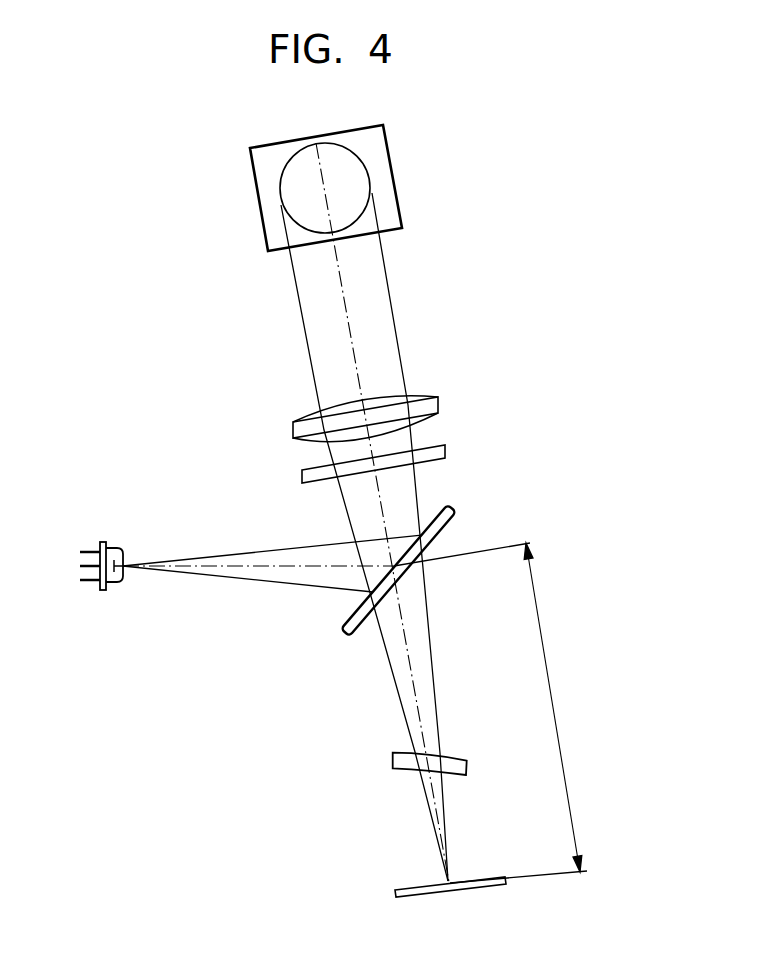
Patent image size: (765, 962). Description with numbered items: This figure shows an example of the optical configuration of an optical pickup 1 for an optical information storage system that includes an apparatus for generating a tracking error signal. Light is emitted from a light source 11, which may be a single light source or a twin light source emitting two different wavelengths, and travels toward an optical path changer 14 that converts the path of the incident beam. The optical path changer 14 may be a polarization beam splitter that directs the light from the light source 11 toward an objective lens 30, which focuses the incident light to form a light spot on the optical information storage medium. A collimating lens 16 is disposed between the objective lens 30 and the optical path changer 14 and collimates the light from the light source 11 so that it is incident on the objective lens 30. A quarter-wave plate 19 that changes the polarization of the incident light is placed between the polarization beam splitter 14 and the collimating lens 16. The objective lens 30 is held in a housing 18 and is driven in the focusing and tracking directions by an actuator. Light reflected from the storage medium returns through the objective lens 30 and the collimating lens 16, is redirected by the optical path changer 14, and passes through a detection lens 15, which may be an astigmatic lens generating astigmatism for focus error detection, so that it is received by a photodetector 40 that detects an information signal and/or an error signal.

The optical pickup 1 is at (214, 393).
The light source 11 is at (104, 541).
The optical path changer 14 is at (343, 635).
The detection lens 15 is at (392, 757).
The collimating lens 16 is at (436, 403).
The holder 18 is at (388, 177).
The quarter-wave plate 19 is at (447, 452).
The objective lens 30 is at (362, 160).
The photodetector 40 is at (395, 895).